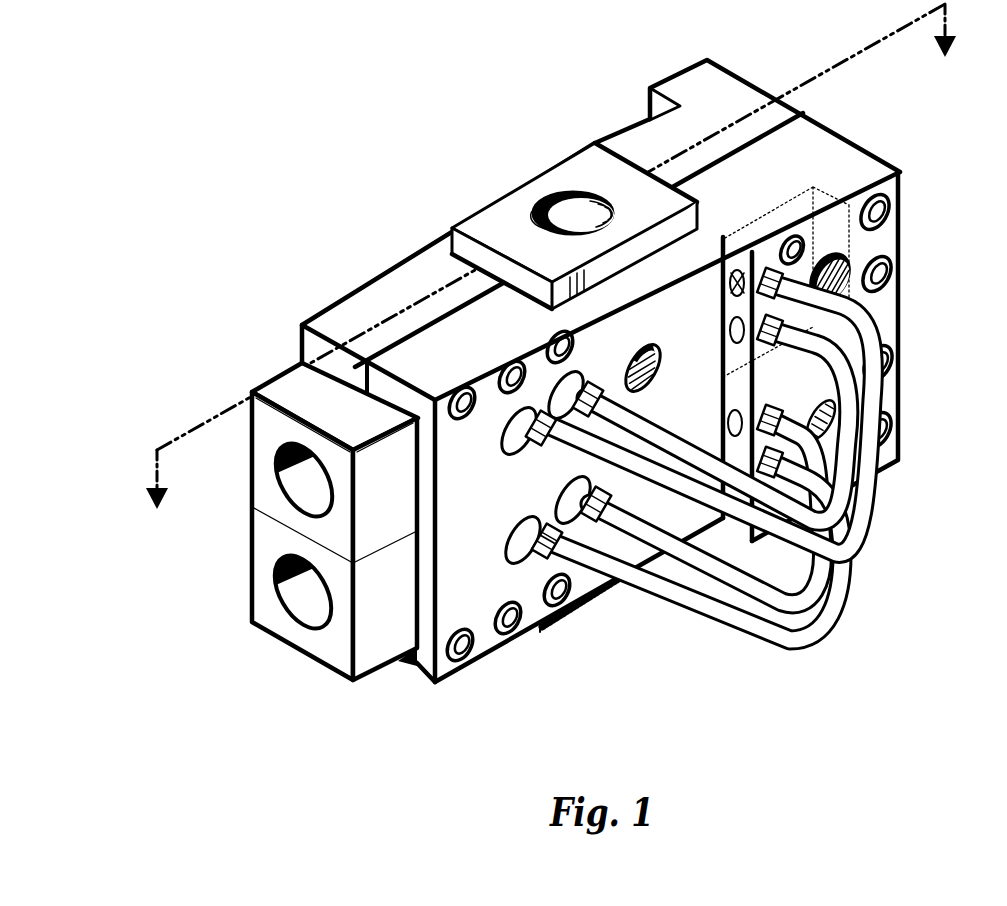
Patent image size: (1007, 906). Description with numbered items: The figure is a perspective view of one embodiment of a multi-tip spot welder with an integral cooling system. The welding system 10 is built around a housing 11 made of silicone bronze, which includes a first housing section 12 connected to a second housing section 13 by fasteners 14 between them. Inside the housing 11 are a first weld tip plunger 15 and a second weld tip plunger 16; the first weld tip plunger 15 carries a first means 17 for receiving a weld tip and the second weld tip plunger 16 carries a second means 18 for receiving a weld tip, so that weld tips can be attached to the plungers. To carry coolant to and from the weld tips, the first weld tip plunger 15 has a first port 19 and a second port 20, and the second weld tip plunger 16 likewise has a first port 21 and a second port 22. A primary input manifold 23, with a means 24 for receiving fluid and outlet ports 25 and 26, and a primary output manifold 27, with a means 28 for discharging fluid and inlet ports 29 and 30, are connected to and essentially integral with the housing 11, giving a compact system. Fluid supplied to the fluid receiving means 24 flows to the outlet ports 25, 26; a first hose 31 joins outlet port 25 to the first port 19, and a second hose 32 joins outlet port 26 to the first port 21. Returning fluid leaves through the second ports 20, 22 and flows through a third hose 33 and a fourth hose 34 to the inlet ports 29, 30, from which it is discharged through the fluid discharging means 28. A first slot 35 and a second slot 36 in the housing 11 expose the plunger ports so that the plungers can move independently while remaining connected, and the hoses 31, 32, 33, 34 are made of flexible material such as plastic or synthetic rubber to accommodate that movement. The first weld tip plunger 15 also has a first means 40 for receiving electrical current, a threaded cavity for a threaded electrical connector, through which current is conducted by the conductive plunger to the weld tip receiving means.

The welding system 10 is at (386, 178).
The housing 11 is at (601, 370).
The first housing section 12 is at (752, 80).
The second housing section 13 is at (857, 320).
The fasteners 14 is at (468, 392).
The first weld tip plunger 15 is at (301, 521).
The second weld tip plunger 16 is at (270, 634).
The first means for receiving a weld tip 17 is at (303, 487).
The second means for receiving a weld tip 18 is at (300, 600).
The first port 19 is at (568, 392).
The second port 20 is at (504, 441).
The first port 21 is at (566, 507).
The second port 22 is at (518, 510).
The primary input manifold 23 is at (838, 236).
The means for receiving fluid 24 is at (893, 278).
The outlet port 25 is at (733, 286).
The outlet port 26 is at (733, 328).
The primary output manifold 27 is at (786, 384).
The means for discharging fluid 28 is at (836, 424).
The inlet port 29 is at (762, 382).
The inlet port 30 is at (731, 424).
The first hose 31 is at (832, 318).
The second hose 32 is at (822, 356).
The third hose 33 is at (832, 496).
The fourth hose 34 is at (826, 568).
The first slot 35 is at (622, 378).
The second slot 36 is at (522, 548).
The first means for receiving electrical current 40 is at (572, 210).